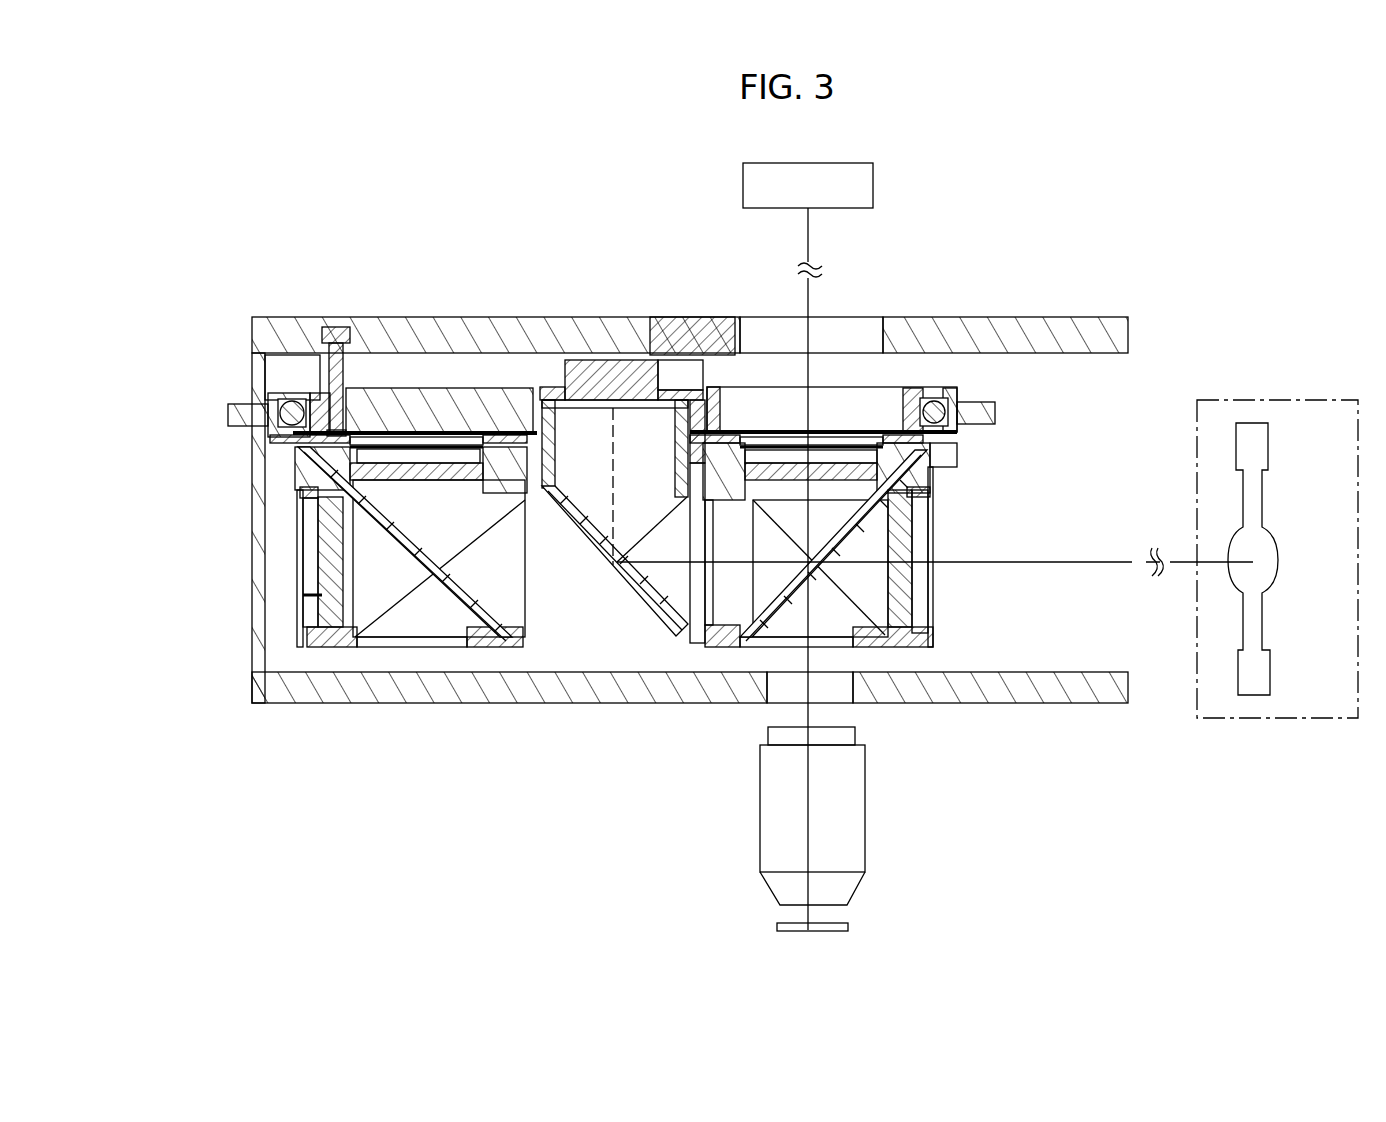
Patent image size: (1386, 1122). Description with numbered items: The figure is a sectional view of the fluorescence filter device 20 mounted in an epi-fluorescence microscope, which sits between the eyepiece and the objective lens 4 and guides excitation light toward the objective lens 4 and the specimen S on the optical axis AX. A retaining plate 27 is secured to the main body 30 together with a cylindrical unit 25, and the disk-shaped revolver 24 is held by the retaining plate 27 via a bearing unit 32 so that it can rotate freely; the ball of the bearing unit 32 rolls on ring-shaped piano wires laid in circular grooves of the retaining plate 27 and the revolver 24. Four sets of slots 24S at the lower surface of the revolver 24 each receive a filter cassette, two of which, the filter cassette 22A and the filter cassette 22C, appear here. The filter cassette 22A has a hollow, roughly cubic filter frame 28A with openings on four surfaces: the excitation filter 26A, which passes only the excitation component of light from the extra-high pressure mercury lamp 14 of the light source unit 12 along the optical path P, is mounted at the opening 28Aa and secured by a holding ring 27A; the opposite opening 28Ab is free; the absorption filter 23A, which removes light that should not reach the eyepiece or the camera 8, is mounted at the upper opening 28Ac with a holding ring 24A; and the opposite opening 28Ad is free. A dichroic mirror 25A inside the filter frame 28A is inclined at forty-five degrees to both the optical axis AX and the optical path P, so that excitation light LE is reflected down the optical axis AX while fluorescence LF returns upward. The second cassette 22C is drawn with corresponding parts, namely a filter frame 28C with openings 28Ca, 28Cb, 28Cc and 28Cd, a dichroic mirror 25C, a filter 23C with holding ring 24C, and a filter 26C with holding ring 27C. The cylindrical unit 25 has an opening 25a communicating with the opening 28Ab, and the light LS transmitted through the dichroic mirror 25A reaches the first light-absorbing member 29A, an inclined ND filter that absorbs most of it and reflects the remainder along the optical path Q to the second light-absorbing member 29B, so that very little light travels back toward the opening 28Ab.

The objective lens 4 is at (867, 795).
The camera 8 is at (878, 183).
The light source unit 12 is at (1322, 400).
The extra-high pressure mercury lamp 14 is at (1262, 492).
The fluorescence filter device 20 is at (1140, 272).
The filter cassette 22A is at (871, 486).
The filter cassette 22C is at (366, 609).
The absorption filter 23A is at (845, 460).
The prism cube 23C is at (437, 480).
The revolver 24 is at (995, 408).
The holding ring 24A is at (745, 360).
The rotating plate portion 24C is at (372, 440).
The slots 24S is at (268, 452).
The cylindrical unit 25 is at (585, 360).
The dichroic mirror 25A is at (900, 523).
The dichroic mirror 25C is at (490, 605).
The opening 25a is at (686, 600).
The excitation filter 26A is at (920, 595).
The excitation filter 26C is at (303, 605).
The retaining plate 27 is at (460, 388).
The holding ring 27A is at (918, 520).
The lens 27C is at (318, 530).
The filter frame 28A is at (930, 470).
The opening 28Aa is at (935, 572).
The opening 28Ab is at (698, 645).
The opening 28Ac is at (832, 440).
The opening 28Ad is at (845, 647).
The housing 28C is at (297, 478).
The housing side wall 28Ca is at (305, 572).
The housing wall 28Cb is at (510, 640).
The housing top 28Cc is at (368, 445).
The housing bottom 28Cd is at (406, 647).
The first light-absorbing member 29A is at (590, 540).
The second light-absorbing member 29B is at (650, 400).
The main body 30 is at (1040, 317).
The bearing unit 32 is at (945, 400).
The optical axis AX is at (812, 782).
The specimen S is at (848, 925).
The optical path P is at (1062, 562).
The optical path Q is at (613, 433).
The fluorescence light LF is at (803, 560).
The light LS is at (780, 552).
The excitation light LE is at (818, 568).